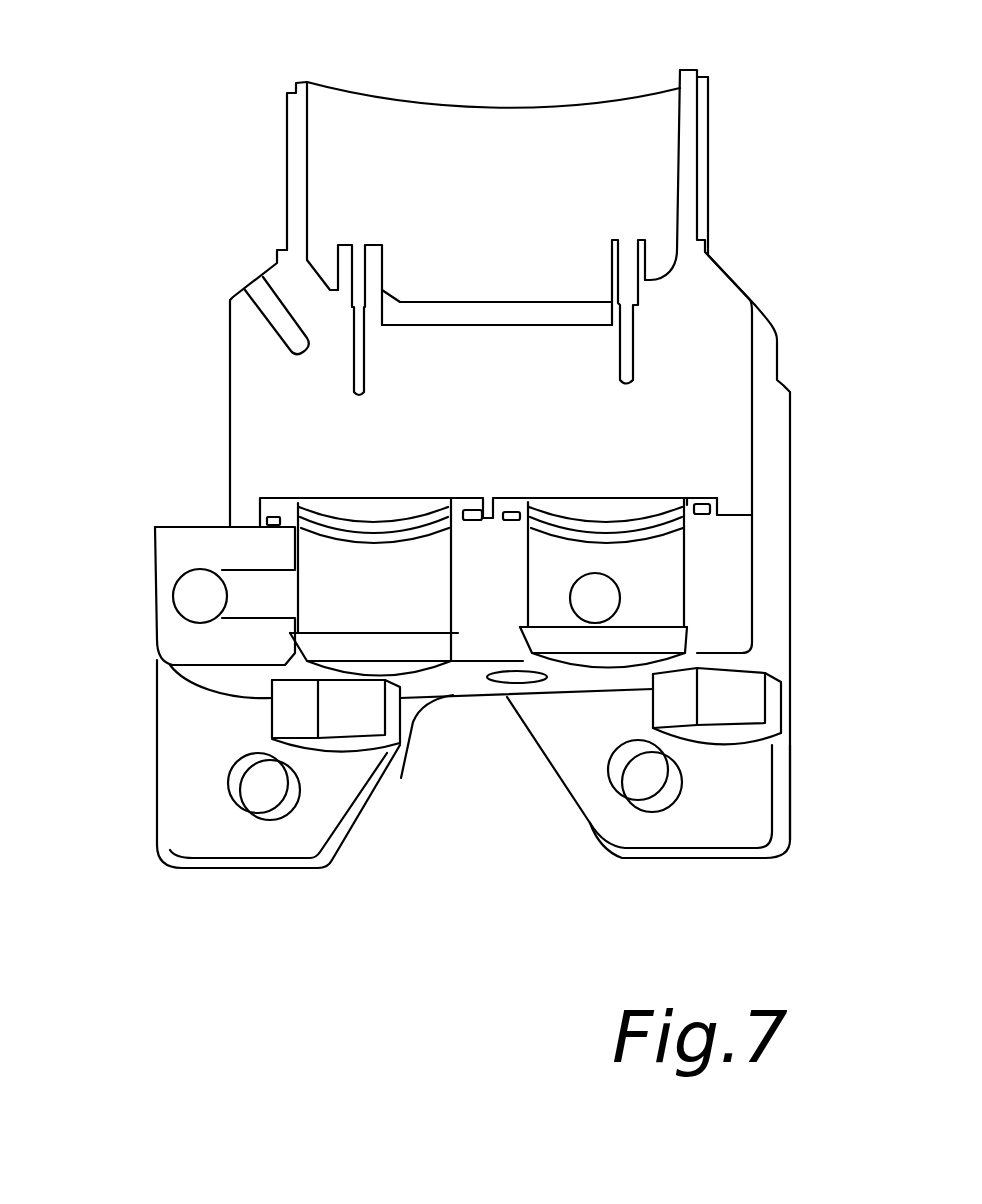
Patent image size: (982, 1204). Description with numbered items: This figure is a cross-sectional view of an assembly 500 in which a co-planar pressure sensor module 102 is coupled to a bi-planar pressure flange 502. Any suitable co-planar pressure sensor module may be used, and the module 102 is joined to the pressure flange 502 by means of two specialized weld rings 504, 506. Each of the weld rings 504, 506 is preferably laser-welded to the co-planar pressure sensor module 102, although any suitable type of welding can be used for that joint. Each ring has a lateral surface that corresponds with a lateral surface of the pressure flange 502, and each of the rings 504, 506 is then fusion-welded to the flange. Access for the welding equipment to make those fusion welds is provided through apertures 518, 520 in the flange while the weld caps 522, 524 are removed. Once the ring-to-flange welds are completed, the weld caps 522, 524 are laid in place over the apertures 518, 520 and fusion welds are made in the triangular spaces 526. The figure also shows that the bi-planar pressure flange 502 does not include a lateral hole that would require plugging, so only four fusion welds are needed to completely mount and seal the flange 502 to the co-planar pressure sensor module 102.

The assembly 500 is at (761, 93).
The co-planar pressure sensor module 102 is at (727, 278).
The bi-planar pressure flange 502 is at (157, 829).
The weld ring 504 is at (295, 530).
The weld ring 506 is at (714, 515).
The aperture 518 is at (293, 650).
The aperture 520 is at (690, 632).
The weld cap 522 is at (343, 650).
The weld cap 524 is at (643, 642).
The triangular spaces 526 is at (505, 695).